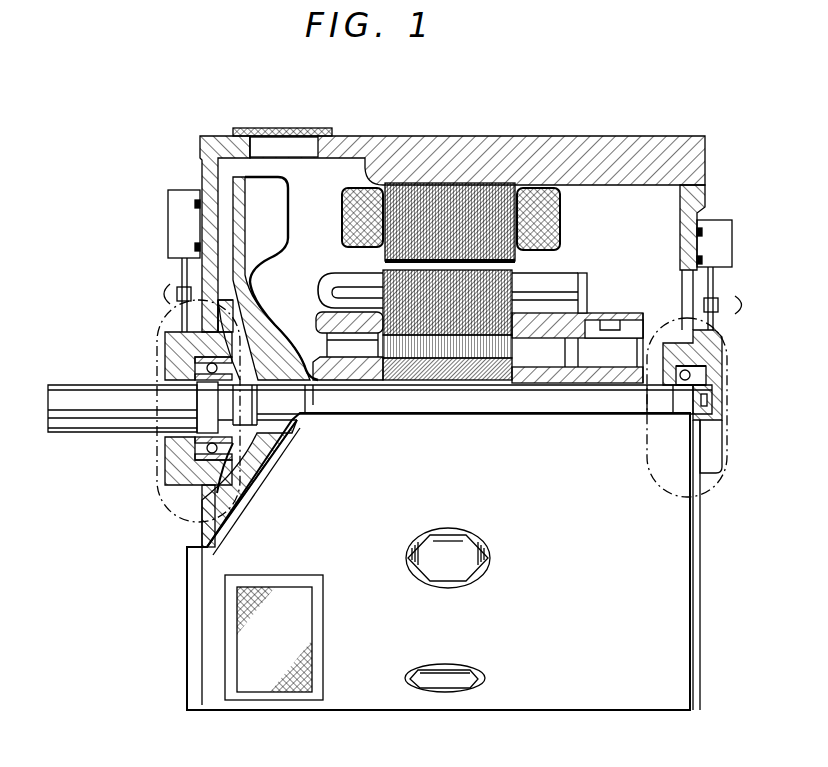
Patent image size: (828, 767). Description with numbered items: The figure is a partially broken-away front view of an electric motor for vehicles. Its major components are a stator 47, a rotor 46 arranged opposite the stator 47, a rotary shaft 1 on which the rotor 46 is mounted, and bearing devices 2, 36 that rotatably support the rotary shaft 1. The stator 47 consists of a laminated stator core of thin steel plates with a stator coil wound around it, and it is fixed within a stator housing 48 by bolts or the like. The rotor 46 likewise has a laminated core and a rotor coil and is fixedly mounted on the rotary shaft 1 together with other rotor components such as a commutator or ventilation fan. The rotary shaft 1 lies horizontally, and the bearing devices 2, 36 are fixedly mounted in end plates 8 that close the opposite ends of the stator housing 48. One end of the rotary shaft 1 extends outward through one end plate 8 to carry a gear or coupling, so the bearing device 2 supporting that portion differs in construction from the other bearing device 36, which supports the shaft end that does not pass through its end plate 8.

The rotary shaft 1 is at (338, 403).
The bearing device 2 is at (156, 521).
The end plates 8 is at (210, 160).
The bearing device 36 is at (727, 367).
The rotor 46 is at (447, 382).
The stator 47 is at (458, 183).
The stator housing 48 is at (556, 148).